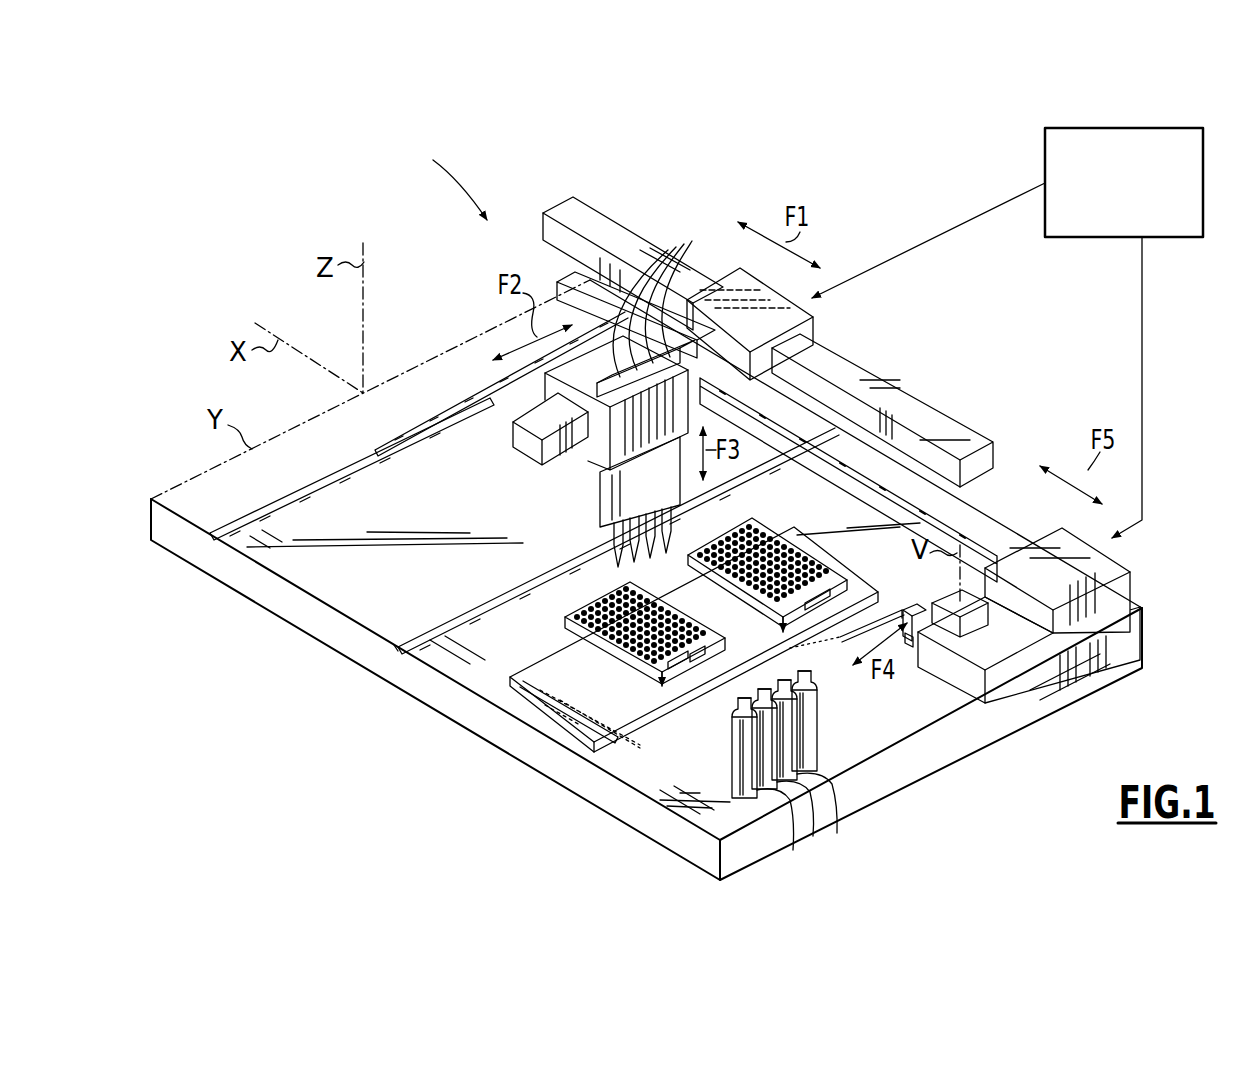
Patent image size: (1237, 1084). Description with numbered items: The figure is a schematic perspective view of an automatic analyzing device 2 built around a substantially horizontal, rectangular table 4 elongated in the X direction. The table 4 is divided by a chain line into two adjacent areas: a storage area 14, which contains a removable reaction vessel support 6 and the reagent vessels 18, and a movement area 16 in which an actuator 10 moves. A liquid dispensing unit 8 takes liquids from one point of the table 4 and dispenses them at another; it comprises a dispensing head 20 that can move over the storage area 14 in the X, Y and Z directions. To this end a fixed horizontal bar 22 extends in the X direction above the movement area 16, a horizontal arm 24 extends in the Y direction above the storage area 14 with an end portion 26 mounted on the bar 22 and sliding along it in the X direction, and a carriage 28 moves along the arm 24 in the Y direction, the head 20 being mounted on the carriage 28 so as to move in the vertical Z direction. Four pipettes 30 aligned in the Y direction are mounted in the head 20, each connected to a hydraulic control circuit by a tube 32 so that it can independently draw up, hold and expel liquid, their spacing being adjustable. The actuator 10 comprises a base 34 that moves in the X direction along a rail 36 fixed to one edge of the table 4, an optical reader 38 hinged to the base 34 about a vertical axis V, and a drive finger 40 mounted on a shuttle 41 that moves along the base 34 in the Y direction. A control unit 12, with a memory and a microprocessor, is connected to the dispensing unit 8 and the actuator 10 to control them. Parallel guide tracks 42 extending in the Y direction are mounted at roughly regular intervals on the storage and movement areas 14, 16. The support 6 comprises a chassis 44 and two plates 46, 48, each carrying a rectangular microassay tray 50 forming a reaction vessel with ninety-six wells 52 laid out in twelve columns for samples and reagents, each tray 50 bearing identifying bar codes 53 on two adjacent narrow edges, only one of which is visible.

The analyzing device 2 is at (448, 172).
The table 4 is at (330, 652).
The reaction vessel support 6 is at (506, 676).
The liquid dispensing unit 8 is at (620, 212).
The actuator 10 is at (1137, 590).
The control unit 12 is at (1007, 333).
The storage area 14 is at (345, 507).
The movement area 16 is at (729, 442).
The reagent vessels 18 is at (813, 834).
The dispensing head 20 is at (582, 509).
The fixed horizontal bar 22 is at (915, 408).
The horizontal arm 24 is at (513, 440).
The end portion 26 is at (733, 283).
The carriage 28 is at (548, 376).
The pipettes 30 is at (638, 552).
The tube 32 is at (692, 246).
The base 34 is at (1013, 673).
The rail 36 is at (995, 529).
The optical reader 38 is at (968, 622).
The drive finger 40 is at (903, 647).
The shuttle 41 is at (902, 610).
The guide tracks 42 is at (257, 513).
The chassis 44 is at (613, 703).
The plate 46 is at (677, 572).
The plate 48 is at (573, 637).
The microassay tray 50 is at (717, 530).
The wells 52 is at (670, 612).
The identifying bar codes 53 is at (697, 660).